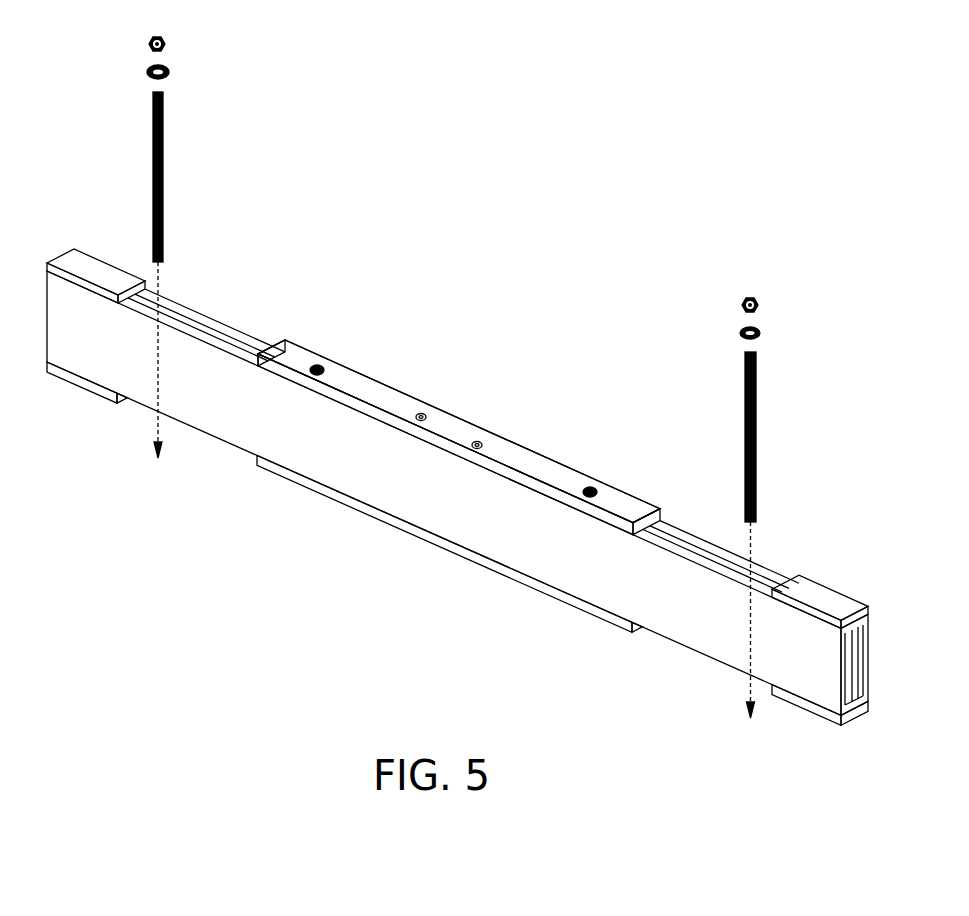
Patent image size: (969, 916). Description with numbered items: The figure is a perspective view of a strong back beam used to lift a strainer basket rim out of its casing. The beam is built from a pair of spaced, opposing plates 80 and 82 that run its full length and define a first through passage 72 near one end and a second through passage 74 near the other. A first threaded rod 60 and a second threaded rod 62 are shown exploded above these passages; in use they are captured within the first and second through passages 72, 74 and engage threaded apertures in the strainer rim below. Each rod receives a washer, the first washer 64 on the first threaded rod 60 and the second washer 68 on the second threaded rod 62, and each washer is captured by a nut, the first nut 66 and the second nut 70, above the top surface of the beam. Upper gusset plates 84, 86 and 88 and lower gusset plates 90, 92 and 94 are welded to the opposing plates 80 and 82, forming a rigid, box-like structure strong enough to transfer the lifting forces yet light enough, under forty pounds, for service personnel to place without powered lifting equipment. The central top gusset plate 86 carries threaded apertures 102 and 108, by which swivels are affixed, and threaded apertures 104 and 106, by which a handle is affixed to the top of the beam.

The first threaded rod 60 is at (167, 234).
The second threaded rod 62 is at (757, 466).
The first washer 64 is at (170, 72).
The first nut 66 is at (167, 46).
The second washer 68 is at (760, 335).
The second nut 70 is at (757, 304).
The first through passage 72 is at (240, 348).
The second through passage 74 is at (762, 568).
The opposing plate 80 is at (224, 423).
The opposing plate 82 is at (260, 354).
The upper gusset plate 84 is at (96, 273).
The upper gusset plate 86 is at (395, 403).
The upper gusset plate 88 is at (834, 603).
The lower gusset plate 90 is at (92, 386).
The lower gusset plate 92 is at (352, 505).
The lower gusset plate 94 is at (812, 703).
The threaded aperture 102 is at (320, 370).
The threaded aperture 104 is at (421, 414).
The threaded aperture 106 is at (478, 442).
The threaded aperture 108 is at (591, 488).